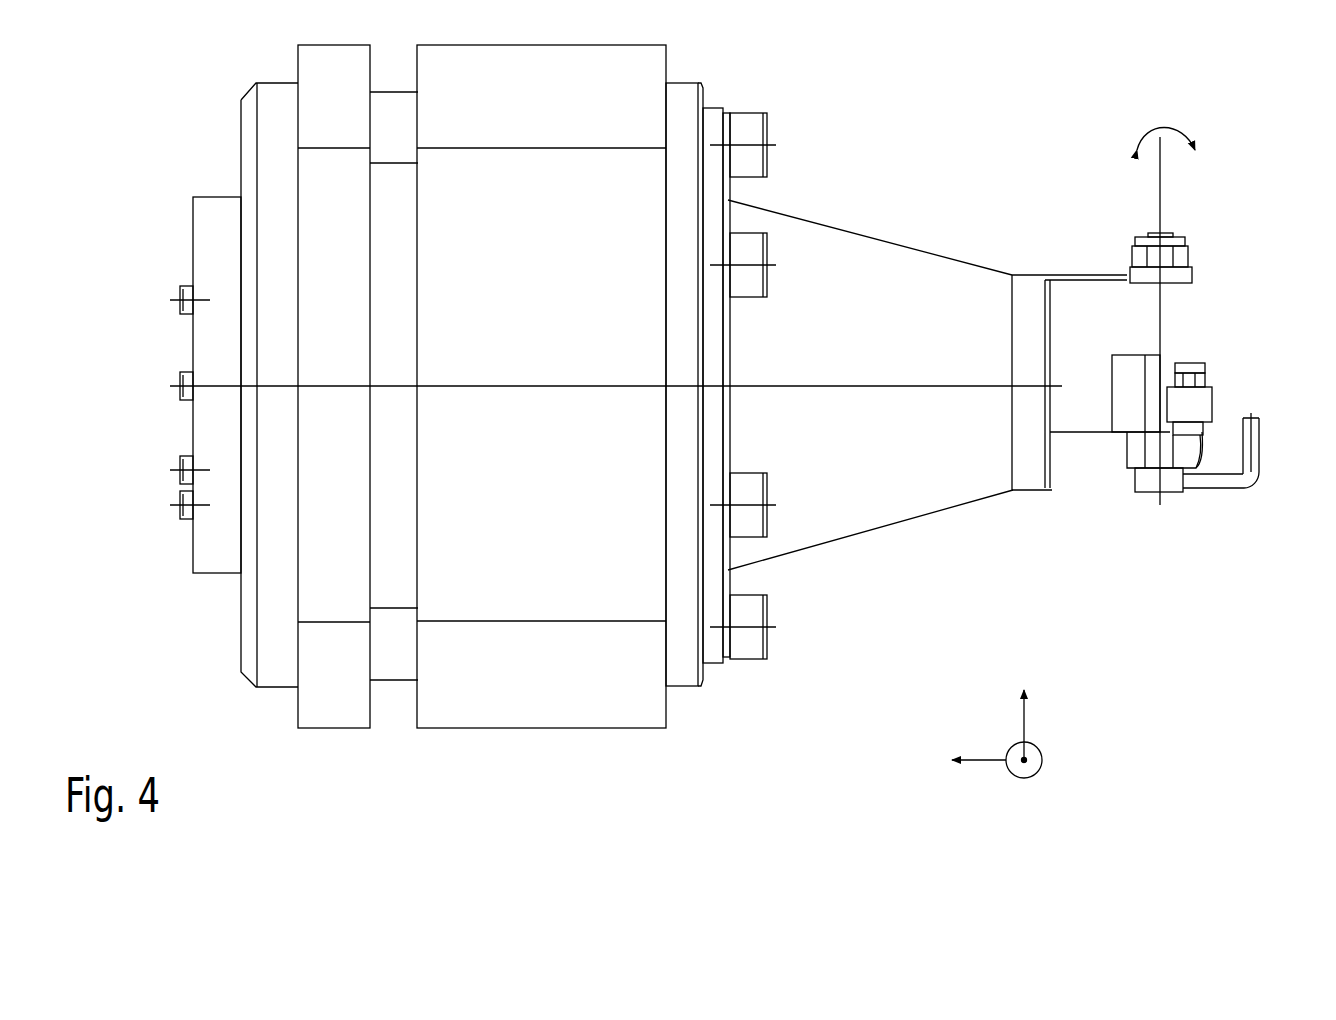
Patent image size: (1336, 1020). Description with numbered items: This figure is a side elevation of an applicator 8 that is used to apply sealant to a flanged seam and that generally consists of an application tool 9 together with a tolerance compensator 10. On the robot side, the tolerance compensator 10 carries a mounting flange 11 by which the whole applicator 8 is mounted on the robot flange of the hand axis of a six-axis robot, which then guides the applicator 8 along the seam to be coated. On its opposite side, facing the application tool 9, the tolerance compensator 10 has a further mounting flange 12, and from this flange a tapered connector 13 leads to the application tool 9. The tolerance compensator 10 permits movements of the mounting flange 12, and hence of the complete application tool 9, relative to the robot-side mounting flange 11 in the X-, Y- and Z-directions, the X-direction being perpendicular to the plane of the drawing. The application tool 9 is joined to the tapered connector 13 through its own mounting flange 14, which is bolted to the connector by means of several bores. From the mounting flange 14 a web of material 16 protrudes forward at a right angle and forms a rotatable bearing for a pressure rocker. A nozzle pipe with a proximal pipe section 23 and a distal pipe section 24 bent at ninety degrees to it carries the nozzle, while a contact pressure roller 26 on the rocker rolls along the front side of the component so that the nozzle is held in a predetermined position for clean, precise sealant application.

The applicator 8 is at (1207, 692).
The application tool 9 is at (1073, 256).
The tolerance compensator 10 is at (832, 189).
The mounting flange 11 is at (193, 232).
The mounting flange 12 is at (715, 653).
The tapered connector 13 is at (867, 528).
The mounting flange 14 is at (1052, 470).
The web of material 16 is at (1127, 315).
The proximal pipe section 23 is at (1219, 488).
The distal pipe section 24 is at (1262, 440).
The contact pressure roller 26 is at (1212, 400).